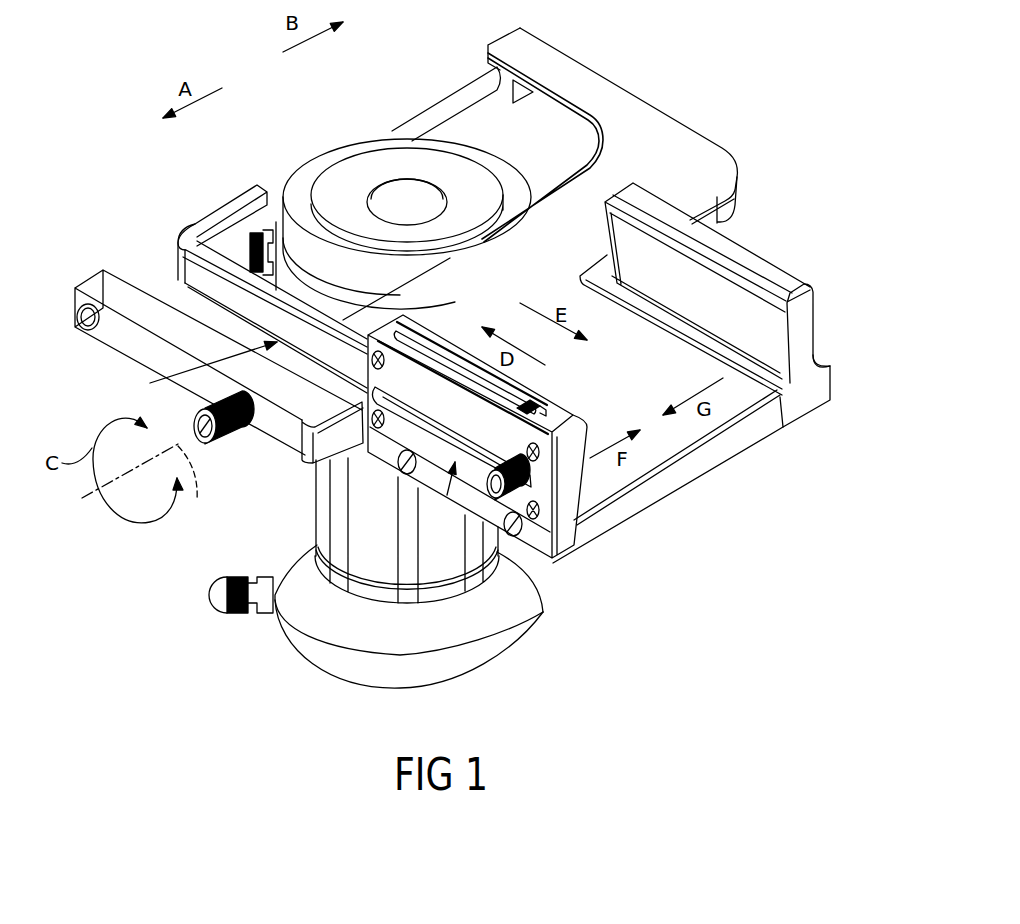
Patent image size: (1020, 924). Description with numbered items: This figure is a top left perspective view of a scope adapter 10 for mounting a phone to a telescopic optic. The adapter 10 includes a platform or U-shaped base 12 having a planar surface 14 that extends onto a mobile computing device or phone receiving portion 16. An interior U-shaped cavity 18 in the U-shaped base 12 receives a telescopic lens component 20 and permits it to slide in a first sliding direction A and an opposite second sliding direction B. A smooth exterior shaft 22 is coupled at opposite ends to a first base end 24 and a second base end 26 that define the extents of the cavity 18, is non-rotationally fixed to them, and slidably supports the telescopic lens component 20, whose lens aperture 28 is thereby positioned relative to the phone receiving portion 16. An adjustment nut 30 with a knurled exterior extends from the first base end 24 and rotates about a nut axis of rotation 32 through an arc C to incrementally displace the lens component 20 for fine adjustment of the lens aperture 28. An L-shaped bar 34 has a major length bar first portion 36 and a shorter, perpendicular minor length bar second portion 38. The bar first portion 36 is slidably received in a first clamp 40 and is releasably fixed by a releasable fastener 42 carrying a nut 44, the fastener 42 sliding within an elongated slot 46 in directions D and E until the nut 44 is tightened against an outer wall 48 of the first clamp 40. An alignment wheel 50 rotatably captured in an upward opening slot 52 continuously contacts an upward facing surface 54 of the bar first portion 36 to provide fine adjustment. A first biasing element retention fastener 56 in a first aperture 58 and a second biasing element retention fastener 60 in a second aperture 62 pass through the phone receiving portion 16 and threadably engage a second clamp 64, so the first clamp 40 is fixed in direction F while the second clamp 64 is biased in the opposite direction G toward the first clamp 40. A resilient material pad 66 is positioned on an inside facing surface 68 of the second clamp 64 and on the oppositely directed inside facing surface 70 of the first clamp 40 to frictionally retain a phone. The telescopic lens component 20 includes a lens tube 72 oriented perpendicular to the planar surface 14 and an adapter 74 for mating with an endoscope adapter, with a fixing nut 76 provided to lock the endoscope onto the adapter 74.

The adapter 10 is at (808, 100).
The U-shaped base 12 is at (715, 125).
The planar surface 14 is at (623, 110).
The phone receiving portion 16 is at (678, 437).
The U-shaped cavity 18 is at (547, 110).
The telescopic lens component 20 is at (302, 156).
The shaft 22 is at (457, 97).
The first base end 24 is at (120, 272).
The second base end 26 is at (487, 67).
The lens aperture 28 is at (393, 181).
The adjustment nut 30 is at (193, 402).
The nut axis of rotation 32 is at (205, 506).
The L-shaped bar 34 is at (198, 368).
The bar first portion 36 is at (187, 287).
The bar second portion 38 is at (228, 203).
The first clamp 40 is at (563, 488).
The releasable fastener 42 is at (542, 545).
The nut 44 is at (494, 497).
The elongated slot 46 is at (403, 463).
The outer wall 48 is at (447, 495).
The alignment wheel 50 is at (530, 407).
The upward opening slot 52 is at (433, 352).
The upward facing surface 54 is at (365, 345).
The first biasing element retention fastener 56 is at (397, 472).
The first aperture 58 is at (367, 570).
The second biasing element retention fastener 60 is at (497, 552).
The second aperture 62 is at (512, 536).
The second clamp 64 is at (800, 327).
The resilient material pad 66 is at (743, 303).
The inside facing surface 68 is at (772, 362).
The inside facing surface 70 is at (648, 490).
The lens tube 72 is at (315, 627).
The adapter 74 is at (338, 663).
The fixing nut 76 is at (236, 617).